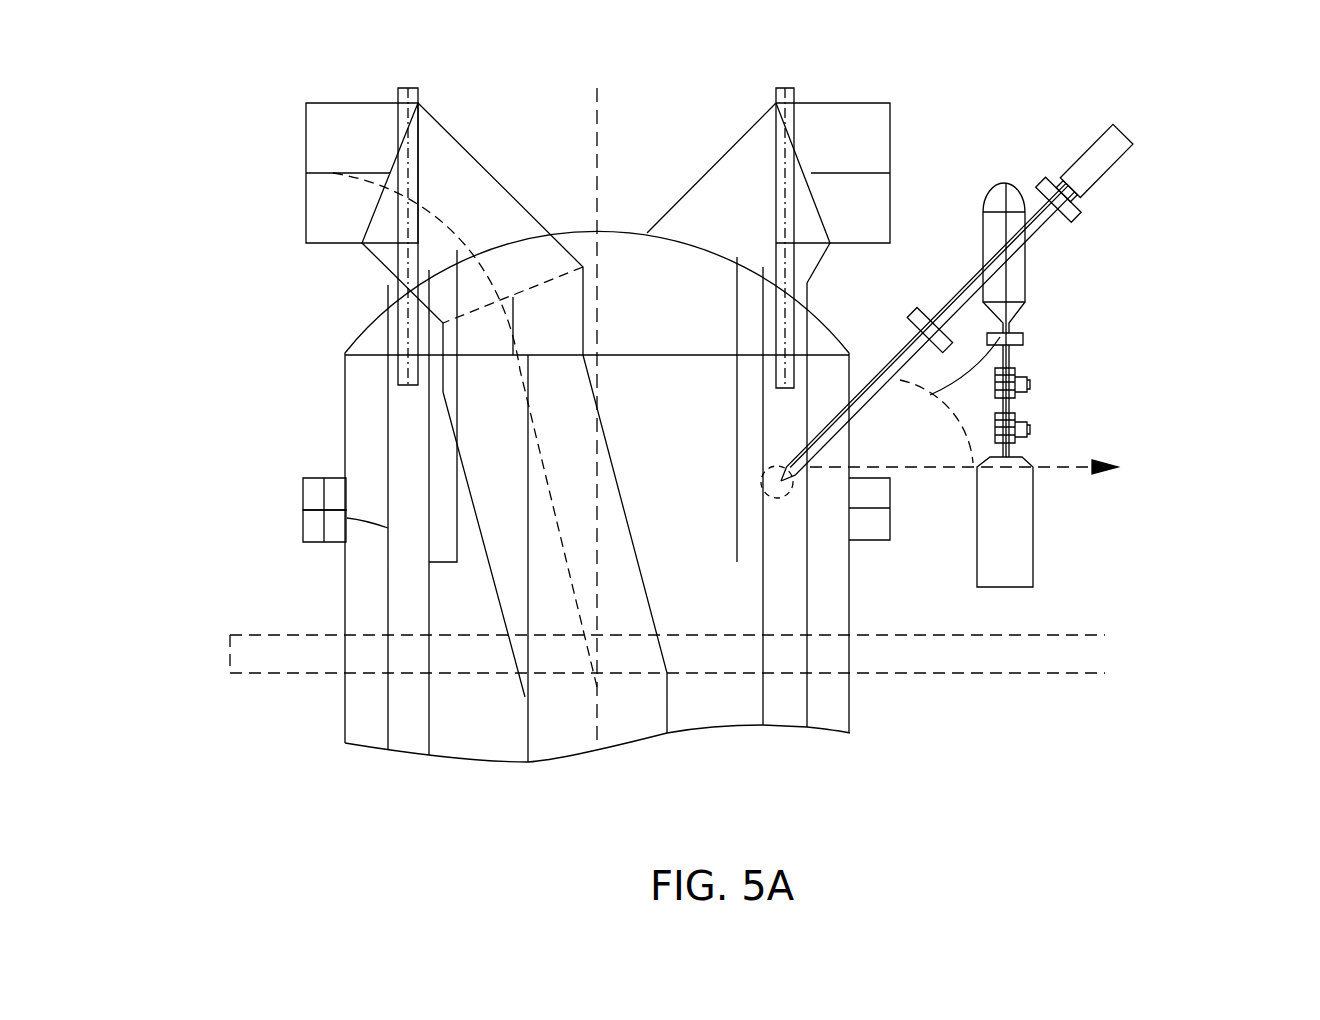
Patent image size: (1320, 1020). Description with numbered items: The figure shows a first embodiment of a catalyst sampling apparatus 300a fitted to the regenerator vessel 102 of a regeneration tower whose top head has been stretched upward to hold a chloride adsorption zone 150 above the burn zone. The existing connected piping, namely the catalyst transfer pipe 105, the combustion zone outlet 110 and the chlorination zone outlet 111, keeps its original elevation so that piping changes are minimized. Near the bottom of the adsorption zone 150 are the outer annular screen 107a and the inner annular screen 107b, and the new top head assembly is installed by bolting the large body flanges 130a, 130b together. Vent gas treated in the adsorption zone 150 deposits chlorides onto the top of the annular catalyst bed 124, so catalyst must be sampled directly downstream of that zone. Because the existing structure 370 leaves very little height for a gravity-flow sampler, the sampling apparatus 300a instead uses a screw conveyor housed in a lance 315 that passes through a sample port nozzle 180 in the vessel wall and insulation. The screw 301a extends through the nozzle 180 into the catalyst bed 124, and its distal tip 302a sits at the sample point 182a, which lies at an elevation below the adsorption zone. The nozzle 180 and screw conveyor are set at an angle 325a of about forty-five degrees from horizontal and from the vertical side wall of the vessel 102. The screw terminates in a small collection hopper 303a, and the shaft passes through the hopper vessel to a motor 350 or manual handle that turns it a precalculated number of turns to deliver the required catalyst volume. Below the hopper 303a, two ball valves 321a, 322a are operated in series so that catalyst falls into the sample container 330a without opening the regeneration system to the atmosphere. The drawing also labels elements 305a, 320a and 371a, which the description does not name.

The regenerator vessel 102 is at (346, 433).
The catalyst transfer pipe 105 is at (777, 103).
The annular screen 107a is at (808, 710).
The annular screen 107b is at (763, 708).
The combustion zone outlet 110 is at (833, 103).
The chlorination zone outlet 111 is at (364, 103).
The annular catalyst bed 124 is at (765, 400).
The large body flange 130a is at (303, 480).
The large body flange 130b is at (303, 537).
The chloride adsorption zone 150 is at (325, 314).
The sample port nozzle 180 is at (988, 300).
The sample point 182a is at (763, 465).
The sampling apparatus 300a is at (188, 300).
The screw 301a is at (950, 300).
The tip 302a is at (795, 485).
The collection hopper 303a is at (950, 300).
The lance coupling 305a is at (1077, 207).
The lance 315 is at (828, 420).
The feed line 320a is at (1006, 183).
The ball valve 321a is at (1028, 380).
The ball valve 322a is at (1028, 428).
The angle 325a is at (1018, 338).
The sample container 330a is at (1033, 523).
The motor 350 is at (1128, 134).
The existing structure 370 is at (258, 633).
The movement path 371a is at (1155, 475).